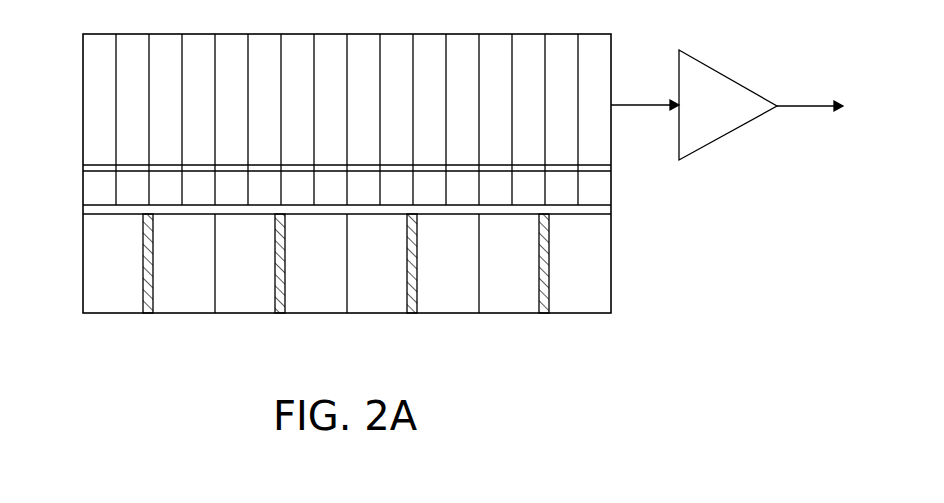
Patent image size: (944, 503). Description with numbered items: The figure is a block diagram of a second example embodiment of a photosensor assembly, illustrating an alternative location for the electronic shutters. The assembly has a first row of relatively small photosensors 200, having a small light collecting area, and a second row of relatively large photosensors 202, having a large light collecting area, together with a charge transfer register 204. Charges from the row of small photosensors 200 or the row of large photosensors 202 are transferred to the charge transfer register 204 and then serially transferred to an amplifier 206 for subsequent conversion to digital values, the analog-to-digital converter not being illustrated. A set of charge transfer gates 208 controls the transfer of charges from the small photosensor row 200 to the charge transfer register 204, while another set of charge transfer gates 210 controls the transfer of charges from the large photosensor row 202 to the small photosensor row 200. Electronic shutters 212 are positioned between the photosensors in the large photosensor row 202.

The first row of relatively small photosensors 200 is at (611, 190).
The second row of relatively large photosensors 202 is at (611, 268).
The charge transfer register 204 is at (613, 52).
The amplifier 206 is at (733, 115).
The charge transfer gates 208 is at (83, 165).
The charge transfer gates 210 is at (83, 205).
The electronic shutters 212 is at (543, 316).